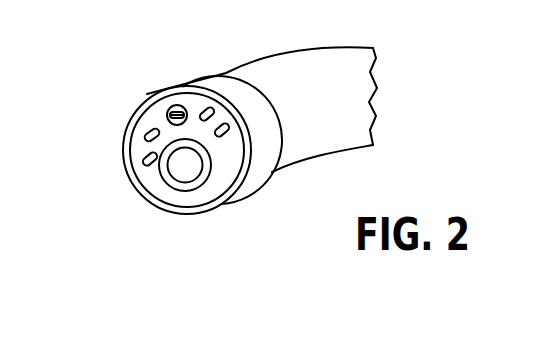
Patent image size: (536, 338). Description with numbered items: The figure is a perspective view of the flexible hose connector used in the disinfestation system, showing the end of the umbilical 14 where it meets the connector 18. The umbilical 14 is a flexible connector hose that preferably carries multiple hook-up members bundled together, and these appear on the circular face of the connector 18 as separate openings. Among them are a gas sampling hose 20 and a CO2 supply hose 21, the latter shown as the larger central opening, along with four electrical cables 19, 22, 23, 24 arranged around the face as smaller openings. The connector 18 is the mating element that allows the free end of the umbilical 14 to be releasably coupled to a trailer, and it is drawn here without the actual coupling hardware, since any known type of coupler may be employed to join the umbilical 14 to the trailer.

The umbilical 14 is at (292, 47).
The mating element 18 is at (257, 183).
The electrical cable 19 is at (204, 109).
The gas sampling hose 20 is at (242, 134).
The CO2 supply hose 21 is at (178, 174).
The electrical cable 22 is at (141, 133).
The electrical cable 23 is at (142, 164).
The electrical cable 24 is at (170, 108).